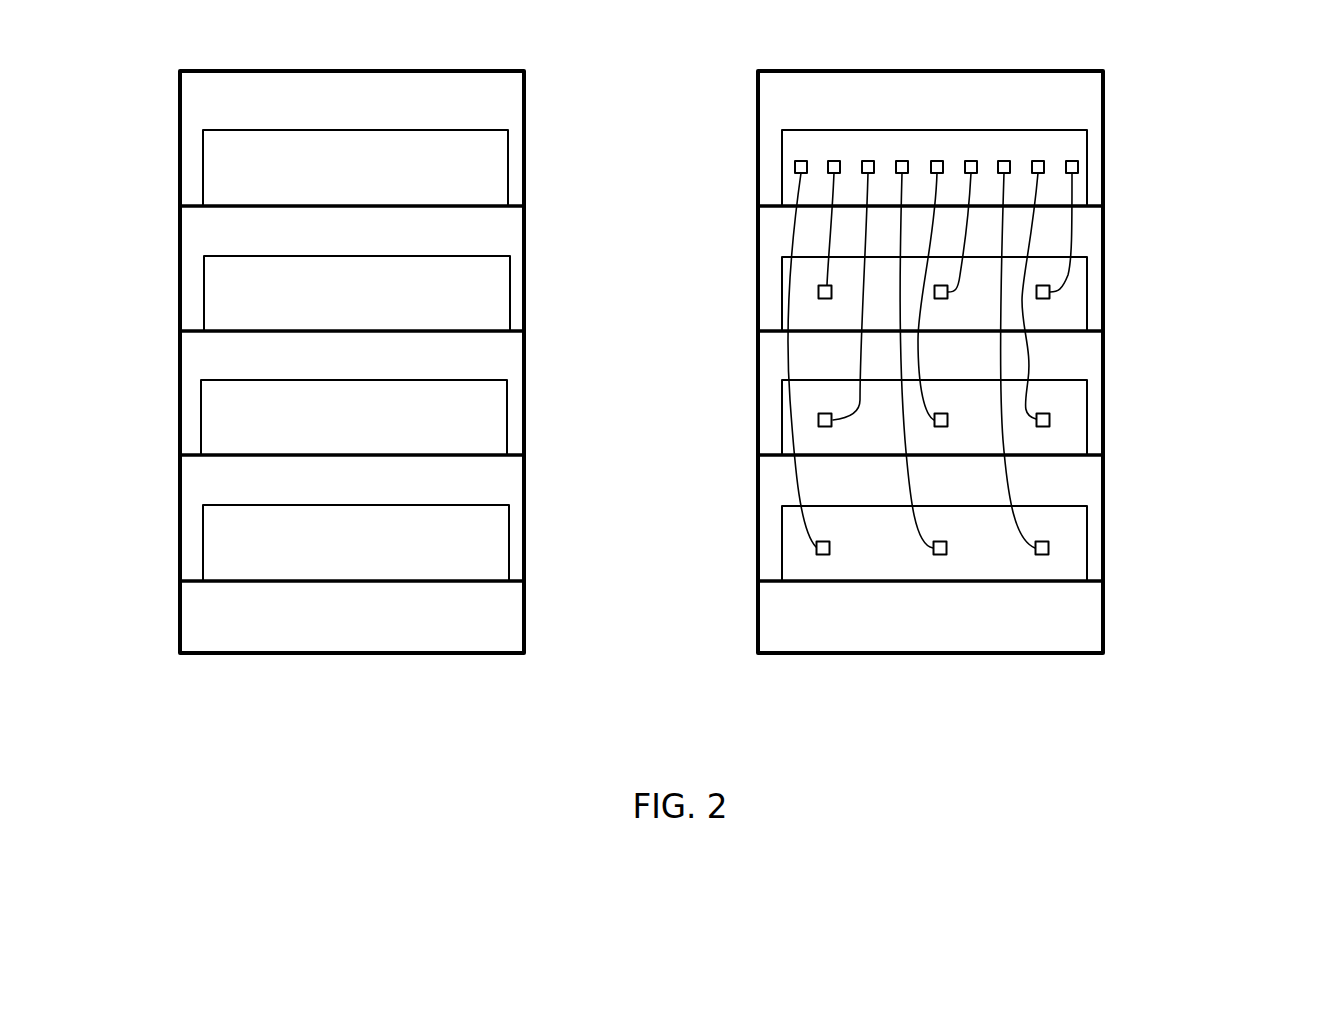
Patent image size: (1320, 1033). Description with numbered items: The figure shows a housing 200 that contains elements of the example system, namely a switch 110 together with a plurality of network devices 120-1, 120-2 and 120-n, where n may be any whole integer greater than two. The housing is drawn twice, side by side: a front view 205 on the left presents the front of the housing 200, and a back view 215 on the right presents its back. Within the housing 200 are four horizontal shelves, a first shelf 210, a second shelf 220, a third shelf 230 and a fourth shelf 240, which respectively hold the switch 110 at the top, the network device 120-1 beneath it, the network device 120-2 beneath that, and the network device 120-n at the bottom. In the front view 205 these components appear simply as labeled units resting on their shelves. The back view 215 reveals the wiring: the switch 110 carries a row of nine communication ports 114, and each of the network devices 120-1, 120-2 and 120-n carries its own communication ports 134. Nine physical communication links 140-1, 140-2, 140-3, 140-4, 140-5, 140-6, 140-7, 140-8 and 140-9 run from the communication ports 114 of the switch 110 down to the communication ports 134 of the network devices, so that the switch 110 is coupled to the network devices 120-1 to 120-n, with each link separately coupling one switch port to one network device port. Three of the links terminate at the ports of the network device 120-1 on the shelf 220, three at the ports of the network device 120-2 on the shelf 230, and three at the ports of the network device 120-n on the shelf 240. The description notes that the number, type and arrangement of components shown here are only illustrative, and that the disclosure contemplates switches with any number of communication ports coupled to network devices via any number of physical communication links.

The housing 200 is at (641, 348).
The front view 205 is at (352, 380).
The back view 215 is at (930, 380).
The switch 110 is at (709, 146).
The communication ports 114 is at (925, 152).
The network device 120-1 is at (645, 293).
The network device 120-2 is at (644, 417).
The network device 120-n is at (645, 543).
The communication ports 134 is at (820, 325).
The physical communication link 140-1 is at (1095, 220).
The physical communication link 140-2 is at (830, 229).
The physical communication link 140-3 is at (850, 296).
The physical communication link 140-4 is at (916, 360).
The physical communication link 140-5 is at (927, 296).
The physical communication link 140-6 is at (959, 232).
The physical communication link 140-7 is at (1018, 360).
The physical communication link 140-8 is at (1030, 296).
The physical communication link 140-9 is at (1061, 232).
The shelf 210 is at (741, 205).
The shelf 220 is at (741, 330).
The shelf 230 is at (741, 455).
The shelf 240 is at (741, 581).